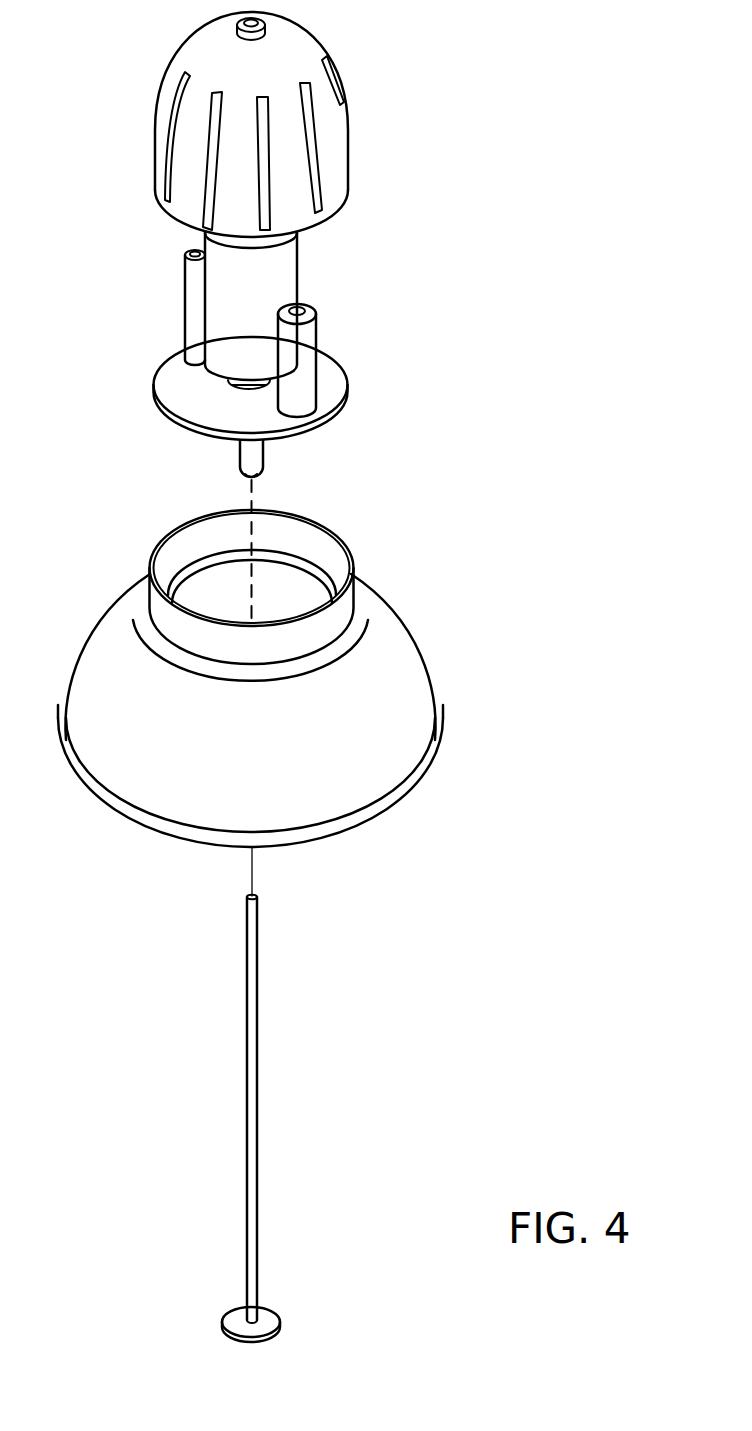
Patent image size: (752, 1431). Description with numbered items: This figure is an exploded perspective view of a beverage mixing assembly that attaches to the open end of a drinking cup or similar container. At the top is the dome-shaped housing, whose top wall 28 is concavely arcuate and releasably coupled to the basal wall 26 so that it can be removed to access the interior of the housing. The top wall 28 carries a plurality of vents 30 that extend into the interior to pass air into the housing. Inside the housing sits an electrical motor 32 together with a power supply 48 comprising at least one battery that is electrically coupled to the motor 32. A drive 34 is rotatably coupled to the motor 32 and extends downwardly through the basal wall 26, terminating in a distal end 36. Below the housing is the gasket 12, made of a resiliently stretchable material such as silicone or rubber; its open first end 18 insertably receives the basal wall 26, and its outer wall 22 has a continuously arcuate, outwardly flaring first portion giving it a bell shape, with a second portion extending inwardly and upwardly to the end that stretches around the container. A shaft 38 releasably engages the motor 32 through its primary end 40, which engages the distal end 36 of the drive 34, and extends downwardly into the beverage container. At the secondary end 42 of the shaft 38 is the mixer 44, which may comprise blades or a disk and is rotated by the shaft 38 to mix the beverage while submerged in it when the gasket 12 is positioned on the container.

The gasket 12 is at (430, 690).
The first end 18 is at (157, 542).
The outer wall 22 is at (400, 638).
The basal wall 26 is at (335, 422).
The top wall 28 is at (300, 43).
The vents 30 is at (208, 133).
The motor 32 is at (298, 262).
The drive 34 is at (258, 462).
The distal end 36 is at (250, 477).
The shaft 38 is at (257, 1083).
The primary end 40 is at (247, 897).
The secondary end 42 is at (242, 1308).
The mixer 44 is at (272, 1320).
The power supply 48 is at (317, 362).